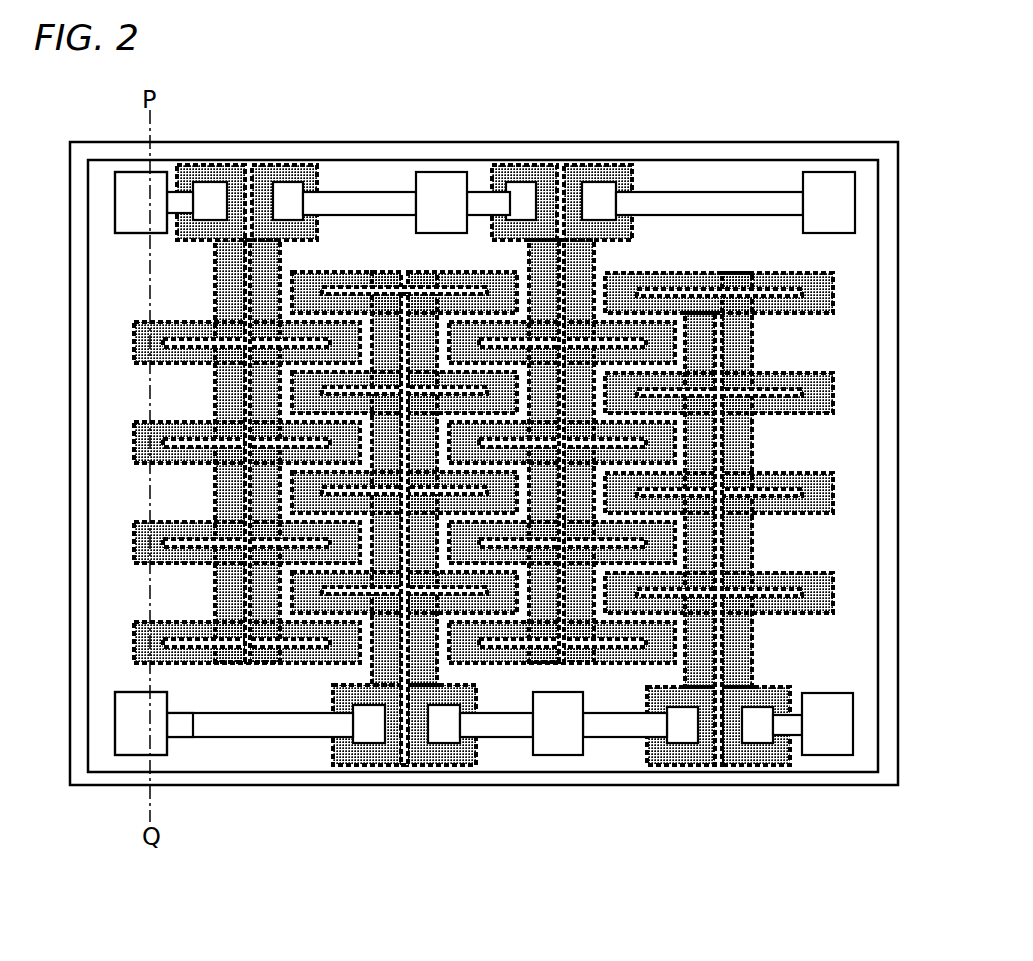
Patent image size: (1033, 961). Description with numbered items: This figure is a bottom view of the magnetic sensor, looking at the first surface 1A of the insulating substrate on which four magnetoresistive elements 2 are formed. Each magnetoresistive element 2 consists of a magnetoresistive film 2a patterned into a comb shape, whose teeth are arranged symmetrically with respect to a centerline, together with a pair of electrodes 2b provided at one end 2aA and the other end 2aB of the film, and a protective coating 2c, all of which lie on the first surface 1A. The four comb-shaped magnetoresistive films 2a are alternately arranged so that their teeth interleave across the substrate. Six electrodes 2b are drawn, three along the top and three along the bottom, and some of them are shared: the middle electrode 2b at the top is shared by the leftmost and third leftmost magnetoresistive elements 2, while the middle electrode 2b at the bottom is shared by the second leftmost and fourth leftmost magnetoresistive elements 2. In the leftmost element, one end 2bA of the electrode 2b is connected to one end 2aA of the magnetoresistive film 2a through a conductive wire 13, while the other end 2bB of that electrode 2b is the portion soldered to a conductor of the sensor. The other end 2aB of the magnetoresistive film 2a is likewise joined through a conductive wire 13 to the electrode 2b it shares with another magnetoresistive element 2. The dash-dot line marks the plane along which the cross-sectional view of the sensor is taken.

The first surface 1A is at (888, 294).
The magnetoresistive element 2 is at (485, 453).
The magnetoresistive film 2a is at (160, 437).
The one end of the magnetoresistive film 2aA is at (229, 172).
The other end of the magnetoresistive film 2aB is at (288, 170).
The electrode 2b is at (131, 178).
The one end of the electrode 2bA is at (171, 190).
The other end of the electrode 2bB is at (137, 215).
The protective coating 2c is at (873, 343).
The conductive wire 13 is at (186, 208).